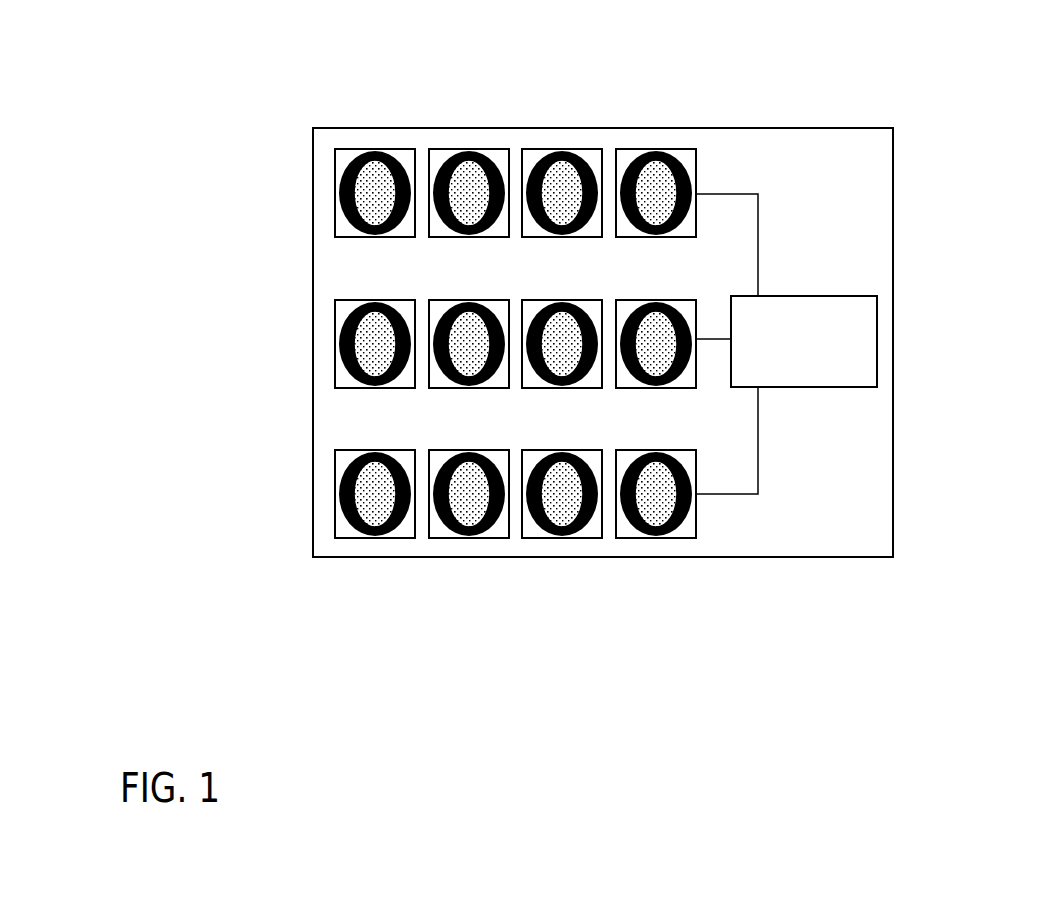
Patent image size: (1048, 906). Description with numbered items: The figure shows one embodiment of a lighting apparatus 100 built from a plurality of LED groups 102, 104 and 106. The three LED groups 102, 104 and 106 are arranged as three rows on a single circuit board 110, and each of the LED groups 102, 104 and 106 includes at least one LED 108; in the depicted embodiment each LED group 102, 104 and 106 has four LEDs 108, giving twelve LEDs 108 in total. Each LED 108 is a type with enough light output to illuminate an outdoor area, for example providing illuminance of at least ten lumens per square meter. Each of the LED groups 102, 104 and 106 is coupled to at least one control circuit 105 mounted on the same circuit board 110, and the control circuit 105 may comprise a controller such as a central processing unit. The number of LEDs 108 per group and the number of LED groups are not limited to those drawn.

The lighting apparatus 100 is at (1027, 56).
The LED group 102 is at (310, 134).
The LED group 104 is at (310, 283).
The LED group 106 is at (400, 597).
The LED 108 is at (375, 605).
The circuit board 110 is at (873, 221).
The control circuit 105 is at (877, 348).